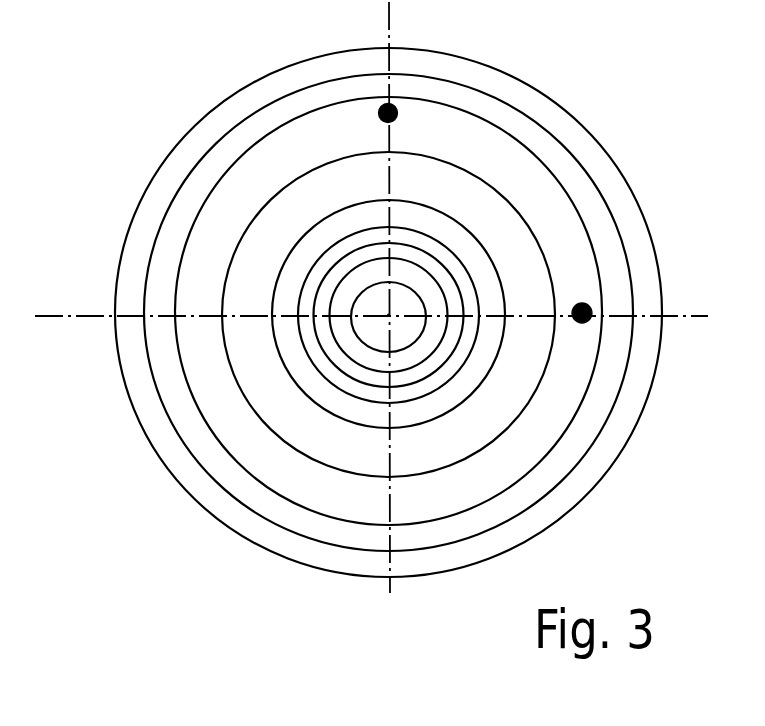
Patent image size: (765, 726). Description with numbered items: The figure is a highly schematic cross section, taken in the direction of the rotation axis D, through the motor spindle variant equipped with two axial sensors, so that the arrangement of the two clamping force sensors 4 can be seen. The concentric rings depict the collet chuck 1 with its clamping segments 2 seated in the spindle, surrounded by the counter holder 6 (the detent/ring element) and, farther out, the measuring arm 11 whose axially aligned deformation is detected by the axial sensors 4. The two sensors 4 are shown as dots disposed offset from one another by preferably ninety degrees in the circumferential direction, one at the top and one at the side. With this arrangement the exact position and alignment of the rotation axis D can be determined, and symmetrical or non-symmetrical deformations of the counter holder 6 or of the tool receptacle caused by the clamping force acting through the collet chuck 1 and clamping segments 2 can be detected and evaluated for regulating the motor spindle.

The collet chuck 1 is at (326, 393).
The clamping segments 2 is at (430, 365).
The clamping force sensor 4 is at (398, 113).
The counter holder 6 is at (531, 373).
The measuring arm 11 is at (583, 360).
The rotation axis D is at (389, 315).